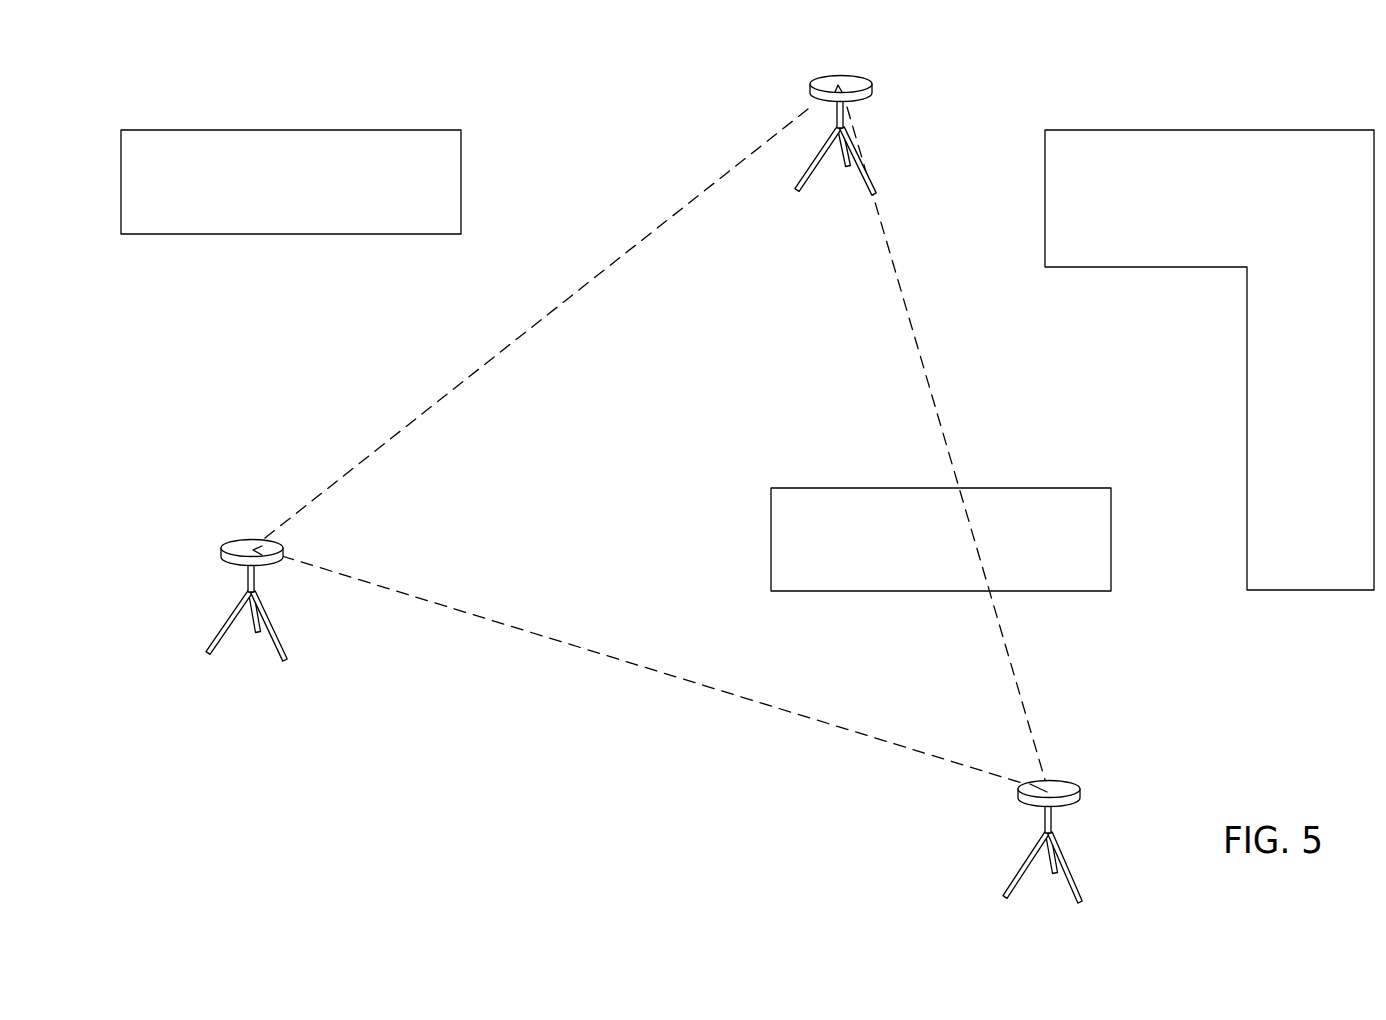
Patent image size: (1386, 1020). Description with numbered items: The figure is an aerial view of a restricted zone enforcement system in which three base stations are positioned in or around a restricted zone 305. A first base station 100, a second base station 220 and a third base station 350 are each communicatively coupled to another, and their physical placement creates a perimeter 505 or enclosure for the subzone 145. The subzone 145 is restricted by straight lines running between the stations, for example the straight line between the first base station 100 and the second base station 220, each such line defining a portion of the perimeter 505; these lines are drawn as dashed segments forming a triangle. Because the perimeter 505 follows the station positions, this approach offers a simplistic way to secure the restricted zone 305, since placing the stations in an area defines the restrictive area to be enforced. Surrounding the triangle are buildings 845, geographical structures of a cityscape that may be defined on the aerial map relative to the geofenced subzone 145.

The base station 100 is at (877, 70).
The second base station 220 is at (220, 522).
The third base station 350 is at (1078, 763).
The perimeter 505 is at (437, 398).
The buildings 845 is at (317, 194).
The subzone 145 is at (662, 453).
The restricted zone 305 is at (711, 467).